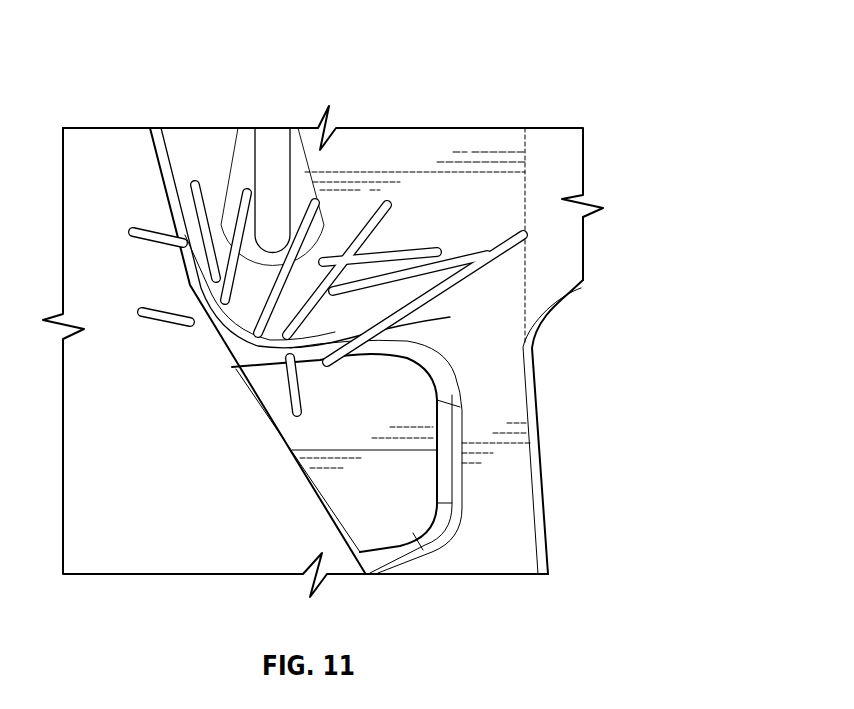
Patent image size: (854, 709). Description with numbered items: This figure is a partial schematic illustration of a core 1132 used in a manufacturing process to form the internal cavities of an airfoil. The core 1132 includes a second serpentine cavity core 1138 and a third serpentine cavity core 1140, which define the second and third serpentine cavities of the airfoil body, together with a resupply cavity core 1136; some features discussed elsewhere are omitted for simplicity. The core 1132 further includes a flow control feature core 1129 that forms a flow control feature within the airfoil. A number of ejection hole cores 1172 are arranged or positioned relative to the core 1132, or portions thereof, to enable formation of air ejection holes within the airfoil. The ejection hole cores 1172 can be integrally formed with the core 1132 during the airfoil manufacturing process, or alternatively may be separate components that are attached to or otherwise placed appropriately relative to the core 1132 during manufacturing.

The core 1132 is at (628, 201).
The second serpentine cavity core 1138 is at (192, 148).
The third serpentine cavity core 1140 is at (443, 142).
The ejection hole cores 1172 is at (138, 227).
The resupply cavity core 1136 is at (513, 465).
The flow control feature core 1129 is at (417, 483).